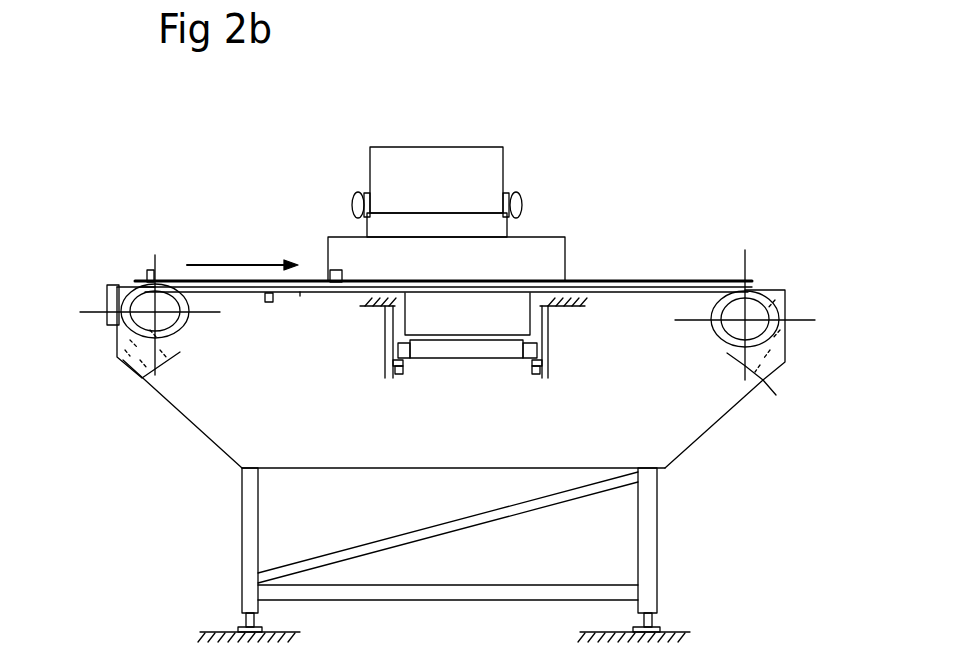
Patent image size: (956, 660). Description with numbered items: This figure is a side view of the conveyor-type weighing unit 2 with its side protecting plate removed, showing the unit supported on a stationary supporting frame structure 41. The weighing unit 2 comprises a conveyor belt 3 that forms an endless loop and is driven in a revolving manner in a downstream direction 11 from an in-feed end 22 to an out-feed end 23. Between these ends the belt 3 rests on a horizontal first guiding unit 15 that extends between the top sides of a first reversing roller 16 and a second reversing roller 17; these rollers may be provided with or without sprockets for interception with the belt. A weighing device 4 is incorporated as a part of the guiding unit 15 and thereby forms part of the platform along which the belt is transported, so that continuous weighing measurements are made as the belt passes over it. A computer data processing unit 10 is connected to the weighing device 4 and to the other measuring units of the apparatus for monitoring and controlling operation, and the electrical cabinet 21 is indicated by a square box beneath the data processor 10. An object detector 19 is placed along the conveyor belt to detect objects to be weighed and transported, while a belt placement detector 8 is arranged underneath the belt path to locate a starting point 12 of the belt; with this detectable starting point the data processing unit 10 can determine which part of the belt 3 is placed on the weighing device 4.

The conveyor-type weighing unit 2 is at (300, 142).
The conveyor belt 3 is at (215, 276).
The weighing device 4 is at (512, 388).
The belt placement detector 8 is at (275, 306).
The computer data processing unit 10 is at (485, 162).
The downstream direction 11 is at (197, 262).
The starting point of the belt 12 is at (173, 279).
The first guiding unit 15 is at (298, 295).
The first reversing roller 16 is at (142, 283).
The second reversing roller 17 is at (770, 290).
The object detector 19 is at (322, 263).
The electrical cabinet 21 is at (548, 248).
The in-feed end 22 is at (140, 226).
The out-feed end 23 is at (723, 268).
The supporting frame structure 41 is at (247, 532).